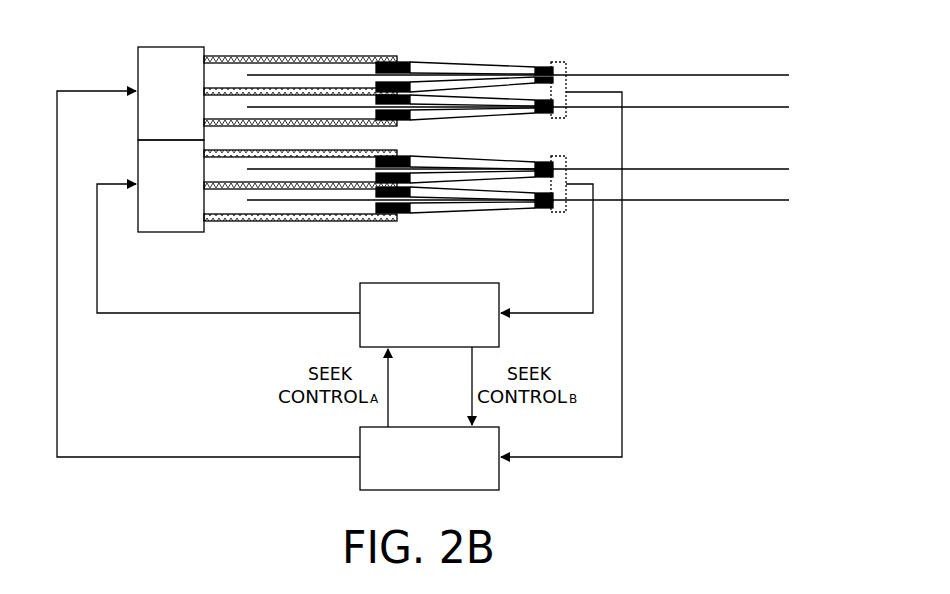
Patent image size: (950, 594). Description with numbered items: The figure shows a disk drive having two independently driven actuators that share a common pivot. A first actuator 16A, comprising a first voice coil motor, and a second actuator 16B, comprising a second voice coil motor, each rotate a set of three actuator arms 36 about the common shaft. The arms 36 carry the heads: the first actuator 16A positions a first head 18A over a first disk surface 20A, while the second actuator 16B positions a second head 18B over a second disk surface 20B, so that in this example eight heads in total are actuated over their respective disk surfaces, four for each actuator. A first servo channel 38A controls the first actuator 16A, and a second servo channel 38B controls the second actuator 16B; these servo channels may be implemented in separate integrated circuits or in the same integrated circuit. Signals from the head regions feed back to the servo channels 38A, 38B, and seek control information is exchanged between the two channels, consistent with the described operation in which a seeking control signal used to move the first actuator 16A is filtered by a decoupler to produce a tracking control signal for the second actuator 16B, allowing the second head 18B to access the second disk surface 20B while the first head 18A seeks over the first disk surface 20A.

The first actuator 16A is at (138, 52).
The second actuator 16B is at (138, 146).
The actuator arms 36 is at (284, 56).
The first head 18A is at (541, 63).
The second head 18B is at (541, 157).
The first disk surface 20A is at (782, 73).
The second disk surface 20B is at (780, 167).
The first servo channel 38A is at (360, 434).
The second servo channel 38B is at (360, 290).